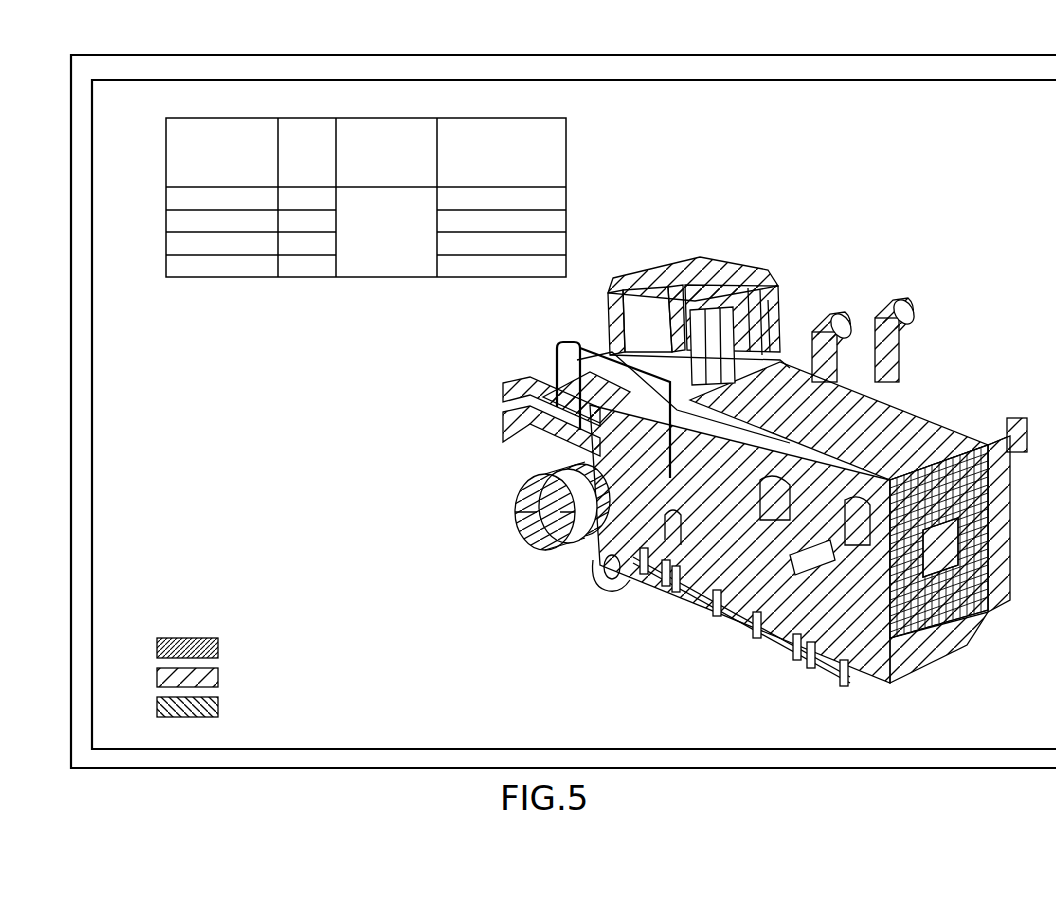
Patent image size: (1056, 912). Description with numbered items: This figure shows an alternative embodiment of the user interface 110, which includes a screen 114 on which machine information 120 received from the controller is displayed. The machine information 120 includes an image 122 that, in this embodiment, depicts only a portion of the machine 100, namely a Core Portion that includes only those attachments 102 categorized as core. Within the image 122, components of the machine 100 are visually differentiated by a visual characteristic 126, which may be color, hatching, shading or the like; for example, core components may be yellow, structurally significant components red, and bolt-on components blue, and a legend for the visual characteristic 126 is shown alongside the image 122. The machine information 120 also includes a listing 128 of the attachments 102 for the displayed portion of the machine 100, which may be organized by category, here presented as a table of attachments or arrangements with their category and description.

The machine 100 is at (922, 388).
The attachment 102 is at (990, 540).
The user interface 110 is at (862, 50).
The screen 114 is at (943, 92).
The machine information 120 is at (910, 210).
The image 122 is at (774, 257).
The visual characteristic 126 is at (155, 638).
The listing 128 is at (152, 195).